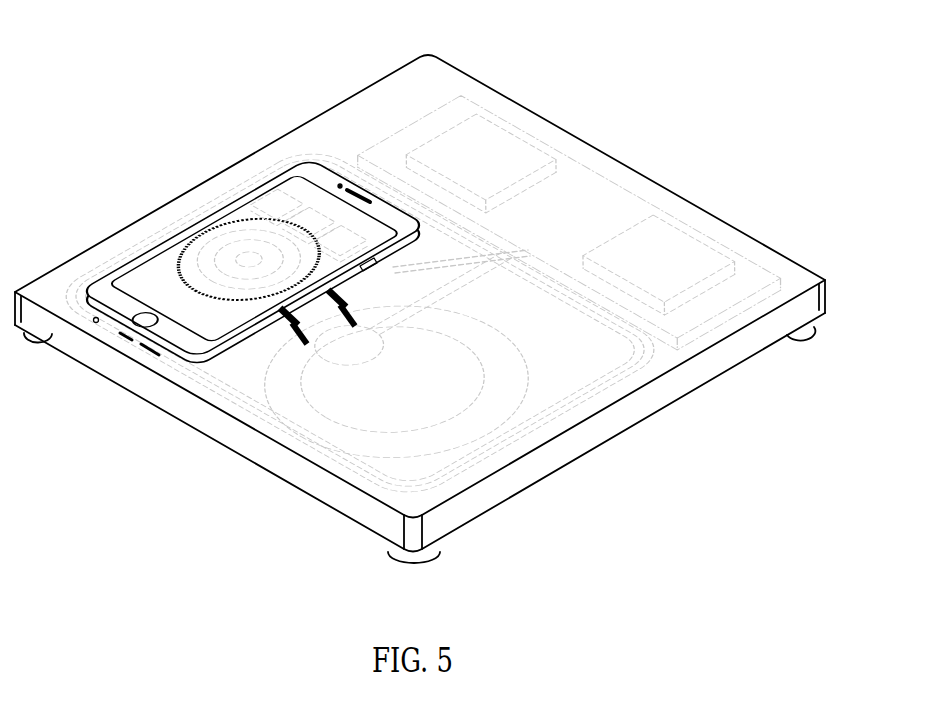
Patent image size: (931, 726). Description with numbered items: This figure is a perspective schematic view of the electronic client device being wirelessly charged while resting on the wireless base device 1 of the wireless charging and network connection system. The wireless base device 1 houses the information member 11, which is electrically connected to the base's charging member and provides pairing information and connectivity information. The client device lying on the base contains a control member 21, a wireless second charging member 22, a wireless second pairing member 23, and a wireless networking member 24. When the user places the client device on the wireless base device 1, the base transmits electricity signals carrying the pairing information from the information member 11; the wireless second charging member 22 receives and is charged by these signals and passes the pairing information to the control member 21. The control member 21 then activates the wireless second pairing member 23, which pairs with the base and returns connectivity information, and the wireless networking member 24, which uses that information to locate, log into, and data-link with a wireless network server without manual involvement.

The wireless base device 1 is at (661, 137).
The information member 11 is at (707, 287).
The control member 21 is at (320, 220).
The wireless second charging member 22 is at (138, 246).
The wireless second pairing member 23 is at (348, 237).
The wireless networking member 24 is at (263, 195).